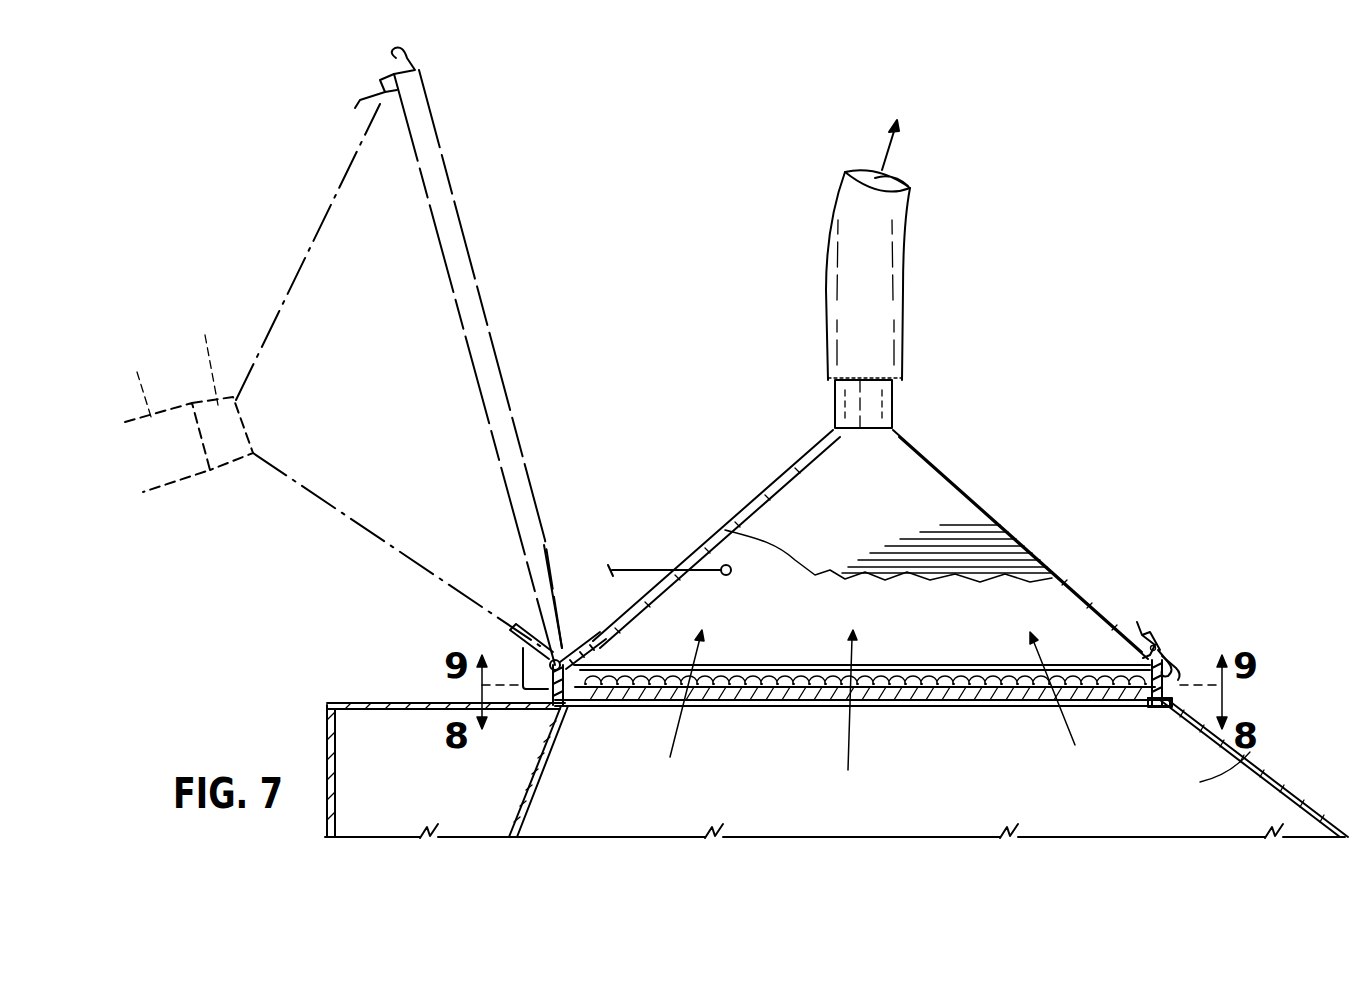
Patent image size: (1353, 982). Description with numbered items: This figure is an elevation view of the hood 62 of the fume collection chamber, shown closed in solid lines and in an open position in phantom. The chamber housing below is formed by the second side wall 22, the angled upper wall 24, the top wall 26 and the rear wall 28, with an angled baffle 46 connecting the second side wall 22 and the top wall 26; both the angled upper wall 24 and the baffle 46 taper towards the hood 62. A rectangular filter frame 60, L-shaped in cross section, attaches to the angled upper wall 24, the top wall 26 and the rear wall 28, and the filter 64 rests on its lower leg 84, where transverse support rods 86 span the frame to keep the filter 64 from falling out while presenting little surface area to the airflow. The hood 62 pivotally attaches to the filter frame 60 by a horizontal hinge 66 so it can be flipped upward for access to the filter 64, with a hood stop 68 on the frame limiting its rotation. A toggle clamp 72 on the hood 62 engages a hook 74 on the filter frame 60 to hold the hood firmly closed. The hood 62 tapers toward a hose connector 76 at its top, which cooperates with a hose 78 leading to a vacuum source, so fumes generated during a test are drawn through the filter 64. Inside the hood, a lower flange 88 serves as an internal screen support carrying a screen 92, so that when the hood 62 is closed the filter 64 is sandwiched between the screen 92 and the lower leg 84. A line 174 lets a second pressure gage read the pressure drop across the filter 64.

The second side wall 22 is at (325, 722).
The angled upper wall 24 is at (1265, 788).
The top wall 26 is at (393, 702).
The rear wall 28 is at (1250, 752).
The angled baffle 46 is at (543, 782).
The filter frame 60 is at (1167, 652).
The hood 62 is at (330, 206).
The filter 64 is at (1000, 706).
The horizontal hinge 66 is at (553, 660).
The hood stop 68 is at (520, 640).
The toggle clamp 72 is at (375, 63).
The hook 74 is at (1178, 656).
The hose connector 76 is at (940, 388).
The hose 78 is at (948, 262).
The lower leg 84 is at (1160, 708).
The transverse support rods 86 is at (775, 706).
The lower flange 88 is at (478, 272).
The screen 92 is at (905, 666).
The line 174 is at (637, 570).